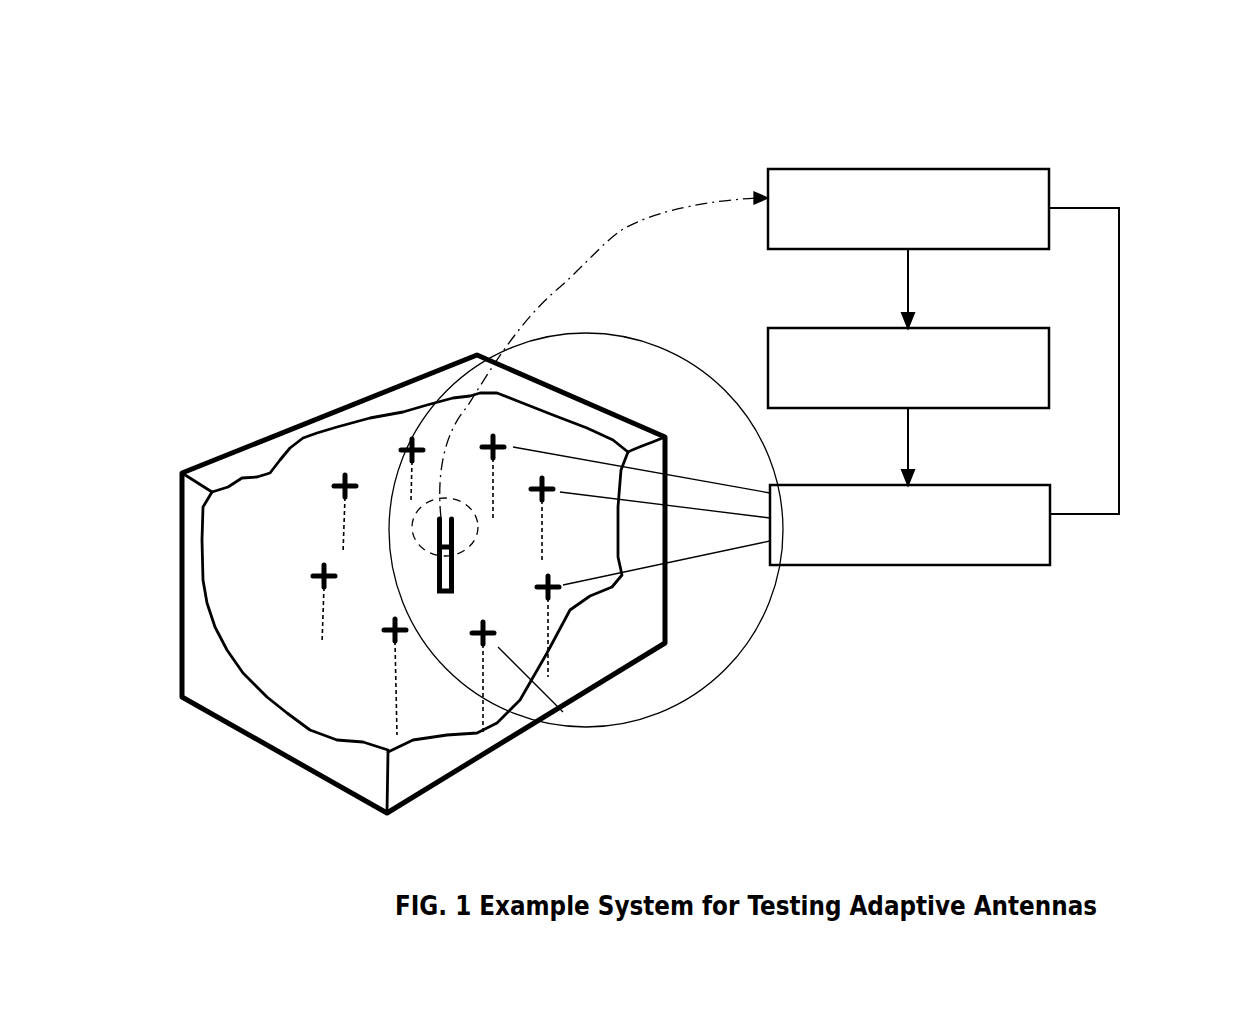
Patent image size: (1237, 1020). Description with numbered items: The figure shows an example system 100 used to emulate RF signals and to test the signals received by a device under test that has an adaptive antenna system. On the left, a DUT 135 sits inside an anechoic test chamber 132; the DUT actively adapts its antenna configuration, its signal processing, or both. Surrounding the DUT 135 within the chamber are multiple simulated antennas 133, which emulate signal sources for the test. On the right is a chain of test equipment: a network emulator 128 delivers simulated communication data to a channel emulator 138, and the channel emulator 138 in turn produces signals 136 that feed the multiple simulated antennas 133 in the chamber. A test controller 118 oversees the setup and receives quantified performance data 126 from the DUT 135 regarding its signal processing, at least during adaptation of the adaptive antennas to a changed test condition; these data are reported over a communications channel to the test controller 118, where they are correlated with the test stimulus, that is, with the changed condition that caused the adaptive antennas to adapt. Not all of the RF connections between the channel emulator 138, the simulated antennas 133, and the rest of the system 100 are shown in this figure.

The example system for testing adaptive antennas 100 is at (1233, 91).
The test controller 118 is at (916, 169).
The quantified performance data 126 is at (670, 212).
The network emulator 128 is at (916, 328).
The anechoic test chamber 132 is at (248, 447).
The simulated antennas 133 is at (390, 620).
The DUT 135 is at (452, 580).
The signals 136 is at (677, 570).
The channel emulator 138 is at (916, 485).